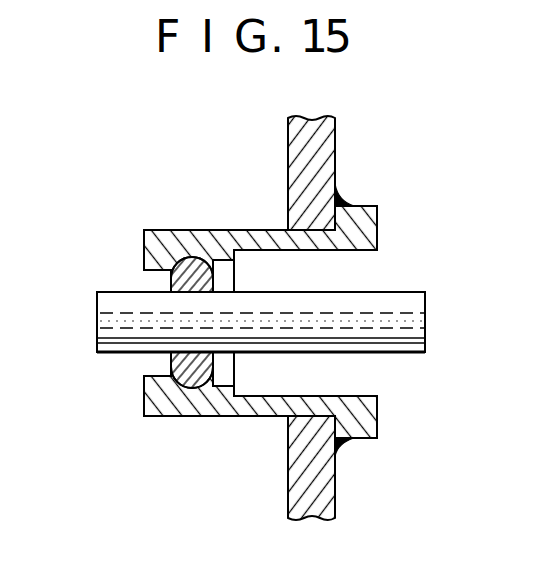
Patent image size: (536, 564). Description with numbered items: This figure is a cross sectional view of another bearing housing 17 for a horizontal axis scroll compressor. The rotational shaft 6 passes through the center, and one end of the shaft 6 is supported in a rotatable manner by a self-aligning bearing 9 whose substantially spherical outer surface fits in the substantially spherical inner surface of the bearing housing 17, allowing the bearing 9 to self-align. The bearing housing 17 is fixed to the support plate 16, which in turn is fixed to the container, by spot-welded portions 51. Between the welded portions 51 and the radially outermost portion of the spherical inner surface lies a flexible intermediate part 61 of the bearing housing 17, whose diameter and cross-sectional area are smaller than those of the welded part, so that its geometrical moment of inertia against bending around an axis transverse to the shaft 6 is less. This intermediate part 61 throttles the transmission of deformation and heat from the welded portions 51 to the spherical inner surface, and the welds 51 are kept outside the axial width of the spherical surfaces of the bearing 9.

The rotational shaft 6 is at (115, 344).
The self-aligning bearing 9 is at (192, 386).
The support plate 16 is at (336, 138).
The bearing housing 17 is at (218, 356).
The spot-welded portions 51 is at (347, 196).
The intermediate part 61 is at (255, 410).